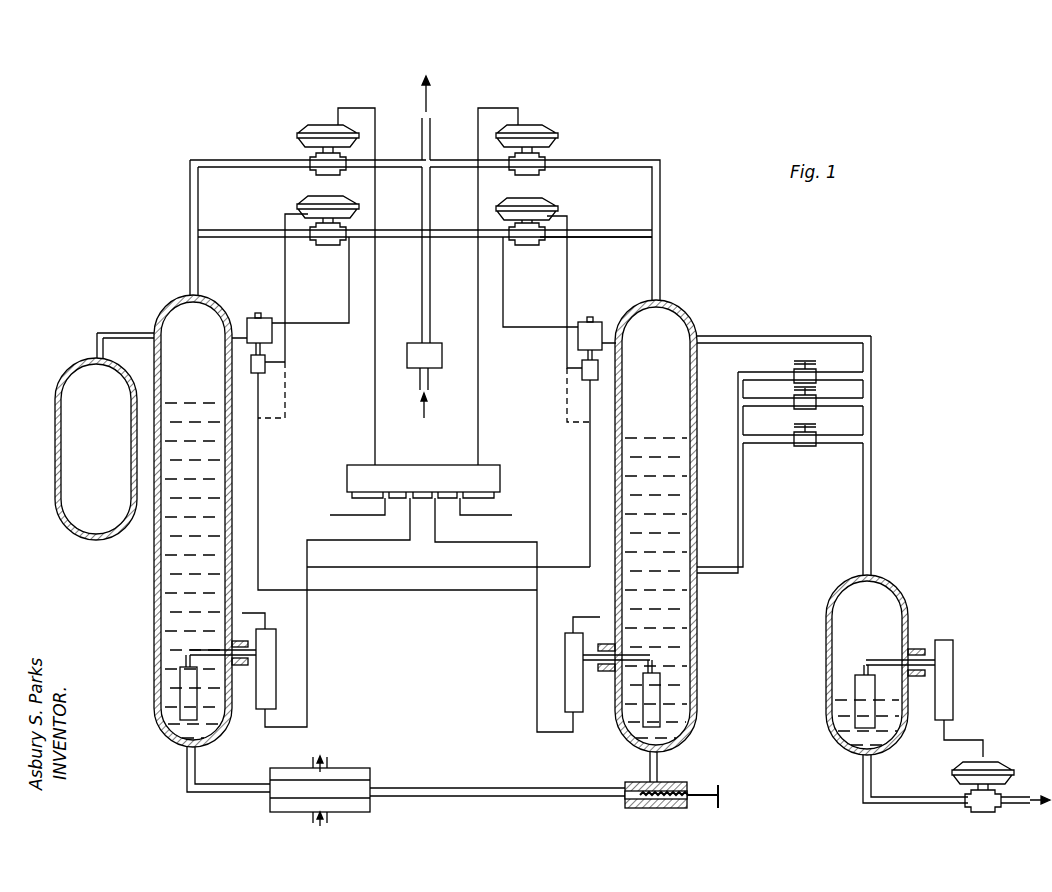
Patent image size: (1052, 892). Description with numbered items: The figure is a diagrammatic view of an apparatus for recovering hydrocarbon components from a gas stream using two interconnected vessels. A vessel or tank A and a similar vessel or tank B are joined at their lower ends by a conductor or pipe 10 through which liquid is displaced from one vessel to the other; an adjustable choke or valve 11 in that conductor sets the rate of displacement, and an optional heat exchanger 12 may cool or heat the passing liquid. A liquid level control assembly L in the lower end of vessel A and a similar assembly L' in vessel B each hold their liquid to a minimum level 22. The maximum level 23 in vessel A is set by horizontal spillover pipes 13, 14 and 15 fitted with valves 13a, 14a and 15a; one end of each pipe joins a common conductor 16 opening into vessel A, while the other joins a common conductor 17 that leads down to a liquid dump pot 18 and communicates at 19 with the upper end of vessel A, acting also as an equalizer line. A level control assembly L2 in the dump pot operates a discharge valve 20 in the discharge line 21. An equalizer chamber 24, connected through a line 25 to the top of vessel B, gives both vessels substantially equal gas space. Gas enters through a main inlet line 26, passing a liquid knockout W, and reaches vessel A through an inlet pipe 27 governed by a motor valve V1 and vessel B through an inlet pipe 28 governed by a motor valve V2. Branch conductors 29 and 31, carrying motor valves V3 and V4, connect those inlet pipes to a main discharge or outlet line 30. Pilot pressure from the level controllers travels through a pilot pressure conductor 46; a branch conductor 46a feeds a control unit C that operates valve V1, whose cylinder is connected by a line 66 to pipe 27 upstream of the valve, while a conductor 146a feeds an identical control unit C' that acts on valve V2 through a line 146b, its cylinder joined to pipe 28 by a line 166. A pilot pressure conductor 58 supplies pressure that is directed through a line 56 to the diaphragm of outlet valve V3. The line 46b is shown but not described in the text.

The conductor or pipe 10 is at (475, 788).
The adjustable choke or valve 11 is at (672, 782).
The heat exchanger 12 is at (275, 768).
The spillover pipe 13 is at (870, 376).
The valve 13a is at (795, 370).
The spillover pipe 14 is at (870, 404).
The valve 14a is at (795, 400).
The spillover pipe 15 is at (870, 440).
The valve 15a is at (795, 436).
The common conductor 16 is at (744, 496).
The common conductor 17 is at (873, 472).
The liquid dump pot 18 is at (898, 580).
The communication 19 is at (712, 336).
The discharge valve 20 is at (996, 758).
The discharge line 21 is at (868, 790).
The minimum liquid level 22 is at (178, 692).
The maximum liquid level 23 is at (195, 403).
The equalizer chamber 24 is at (62, 372).
The line 25 is at (100, 330).
The main inlet line 26 is at (432, 262).
The inlet pipe 27 is at (600, 240).
The inlet pipe 28 is at (252, 228).
The branch conductor 29 is at (653, 160).
The main discharge or outlet line 30 is at (432, 120).
The branch conductor 31 is at (232, 158).
The pilot pressure conductor 46 is at (310, 612).
The branch conductor 46a is at (570, 567).
The valve operator 46b is at (567, 358).
The line 56 is at (478, 418).
The pilot pressure conductor 58 is at (510, 515).
The line 66 is at (510, 327).
The conductor 146a is at (400, 590).
The line 146b is at (286, 362).
The line 166 is at (318, 323).
The vessel or tank A is at (688, 306).
The vessel or tank B is at (160, 306).
The control unit C is at (607, 305).
The control unit C' is at (222, 272).
The liquid level control assembly L is at (567, 664).
The liquid level control assembly L' is at (270, 661).
The liquid level control assembly L2 is at (866, 660).
The diaphragm-operated or motor valve V1 is at (530, 245).
The motor valve V2 is at (328, 245).
The motor valve V3 is at (540, 125).
The motor valve V4 is at (320, 125).
The liquid knockout W is at (407, 352).